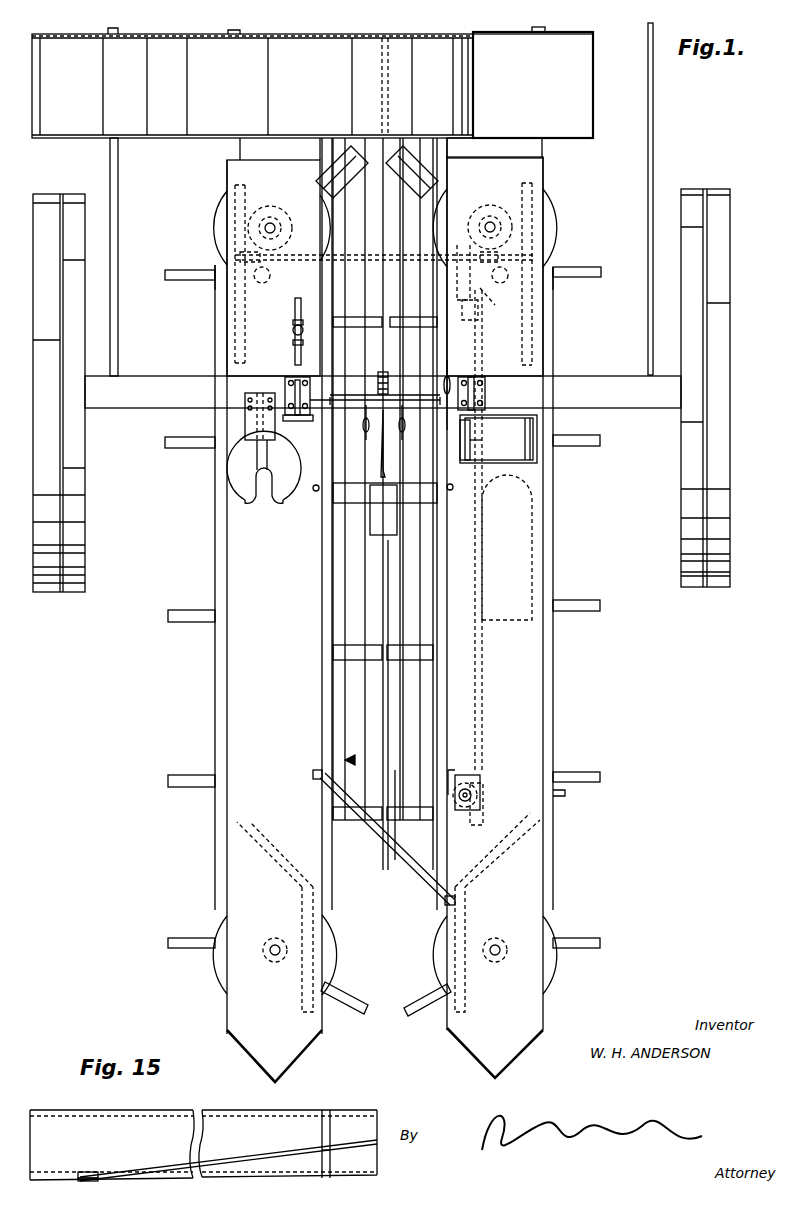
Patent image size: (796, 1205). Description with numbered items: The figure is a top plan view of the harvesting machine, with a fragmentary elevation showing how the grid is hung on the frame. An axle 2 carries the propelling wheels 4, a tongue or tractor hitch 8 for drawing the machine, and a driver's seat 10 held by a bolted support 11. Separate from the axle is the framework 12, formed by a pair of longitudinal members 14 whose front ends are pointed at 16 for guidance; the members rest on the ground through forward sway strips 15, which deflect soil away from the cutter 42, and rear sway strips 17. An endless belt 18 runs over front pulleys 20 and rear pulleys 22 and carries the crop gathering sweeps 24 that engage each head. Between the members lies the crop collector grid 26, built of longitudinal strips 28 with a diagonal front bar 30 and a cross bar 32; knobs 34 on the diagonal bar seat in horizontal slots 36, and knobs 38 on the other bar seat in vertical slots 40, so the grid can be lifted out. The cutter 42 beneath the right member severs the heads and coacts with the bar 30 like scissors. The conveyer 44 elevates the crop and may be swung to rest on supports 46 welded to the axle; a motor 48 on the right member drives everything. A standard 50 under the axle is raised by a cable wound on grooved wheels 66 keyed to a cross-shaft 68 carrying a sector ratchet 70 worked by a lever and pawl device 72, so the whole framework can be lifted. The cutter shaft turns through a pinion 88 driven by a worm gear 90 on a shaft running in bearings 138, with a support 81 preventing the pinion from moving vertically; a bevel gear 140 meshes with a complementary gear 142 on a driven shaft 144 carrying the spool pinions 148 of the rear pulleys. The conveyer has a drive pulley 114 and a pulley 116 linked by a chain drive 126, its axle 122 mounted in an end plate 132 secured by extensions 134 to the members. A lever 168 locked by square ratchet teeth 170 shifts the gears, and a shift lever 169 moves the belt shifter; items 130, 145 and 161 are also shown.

In FIG. 1, the axle 2 is at (588, 376).
In FIG. 1, the propelling wheels 4 is at (87, 530).
In FIG. 1, the tongue or tractor hitch 8 is at (376, 522).
In FIG. 1, the driver's seat 10 is at (290, 470).
In FIG. 1, the bolted support 11 is at (248, 427).
In FIG. 1, the framework 12 is at (520, 755).
In FIG. 15, the framework 12 is at (170, 1110).
In FIG. 1, the longitudinal members 14 is at (240, 668).
In FIG. 15, the longitudinal members 14 is at (125, 1110).
In FIG. 1, the forward sway strips 15 is at (575, 830).
In FIG. 1, the pointed front portions 16 is at (279, 1080).
In FIG. 1, the rear sway strips 17 is at (236, 215).
In FIG. 1, the endless belt 18 is at (214, 499).
In FIG. 1, the front pulleys 20 is at (332, 962).
In FIG. 1, the rear pulleys 22 is at (213, 213).
In FIG. 1, the crop gathering and engaging sweeps 24 is at (410, 170).
In FIG. 1, the crop collector or carrying grid 26 is at (343, 268).
In FIG. 15, the crop collector or carrying grid 26 is at (232, 1146).
In FIG. 1, the longitudinal strips 28 is at (340, 578).
In FIG. 1, the front diagonal cross bar 30 is at (400, 858).
In FIG. 1, the cross bar 32 is at (375, 140).
In FIG. 1, the knob 34 is at (313, 775).
In FIG. 15, the knob 34 is at (88, 1181).
In FIG. 15, the horizontal slots 36 is at (88, 1171).
In FIG. 1, the knobs 38 is at (314, 492).
In FIG. 15, the knobs 38 is at (326, 1152).
In FIG. 15, the vertical slots 40 is at (331, 1122).
In FIG. 1, the cutter 42 is at (397, 788).
In FIG. 1, the conveyer or crop elevating means 44 is at (305, 50).
In FIG. 1, the conveyer supports or rests 46 is at (118, 210).
In FIG. 1, the motor 48 is at (520, 540).
In FIG. 1, the standard 50 is at (298, 418).
In FIG. 1, the grooved wheels 66 is at (309, 385).
In FIG. 1, the cross-shaft 68 is at (362, 412).
In FIG. 1, the sector ratchet 70 is at (377, 380).
In FIG. 1, the manual lever and pawl device 72 is at (390, 392).
In FIG. 1, the support 81 is at (452, 768).
In FIG. 1, the pinion 88 is at (470, 790).
In FIG. 1, the worm gear 90 is at (480, 790).
In FIG. 1, the drive pulley 114 is at (380, 36).
In FIG. 1, the pulley 116 is at (465, 35).
In FIG. 1, the axle of the drive pulley 122 is at (387, 38).
In FIG. 1, the chain drive 126 is at (187, 36).
In FIG. 1, the partition 130 is at (190, 98).
In FIG. 1, the end plate 132 is at (503, 32).
In FIG. 1, the extensions 134 is at (537, 145).
In FIG. 1, the bearings 138 is at (484, 815).
In FIG. 1, the bevel gear 140 is at (462, 309).
In FIG. 1, the complementary bevel gear 142 is at (462, 240).
In FIG. 1, the driven shaft 144 is at (300, 268).
In FIG. 1, the shaft 145 is at (379, 275).
In FIG. 1, the roller or spool pinions 148 is at (284, 207).
In FIG. 1, the bracket 161 is at (465, 443).
In FIG. 1, the lever 168 is at (293, 340).
In FIG. 1, the shift lever 169 is at (448, 372).
In FIG. 1, the square ratchet teeth 170 is at (295, 315).